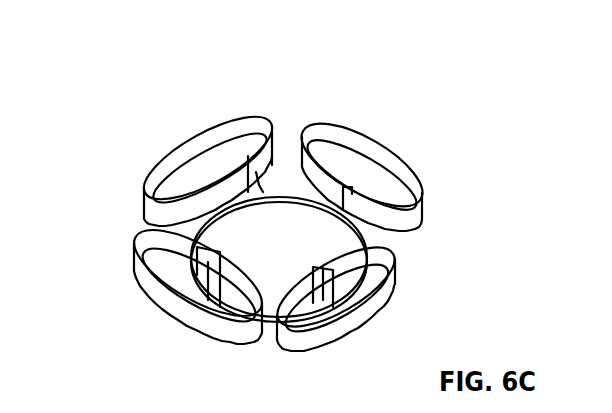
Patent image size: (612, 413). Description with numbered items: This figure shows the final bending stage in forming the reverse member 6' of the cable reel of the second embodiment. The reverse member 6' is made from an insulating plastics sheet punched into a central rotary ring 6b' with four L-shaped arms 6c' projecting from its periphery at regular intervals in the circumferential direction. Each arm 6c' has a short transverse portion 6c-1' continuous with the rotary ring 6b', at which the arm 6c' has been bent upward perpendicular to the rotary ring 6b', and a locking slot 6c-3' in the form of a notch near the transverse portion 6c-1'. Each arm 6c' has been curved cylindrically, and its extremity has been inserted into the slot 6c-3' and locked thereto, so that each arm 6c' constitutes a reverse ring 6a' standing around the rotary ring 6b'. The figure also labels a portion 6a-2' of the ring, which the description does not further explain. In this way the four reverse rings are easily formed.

The reverse member 6' is at (279, 189).
The reverse ring 6a' is at (152, 274).
The ring band portion 6a-2' is at (202, 121).
The rotary ring 6b' is at (352, 259).
The arm 6c' is at (195, 127).
The transverse portion 6c-1' is at (141, 173).
The locking slot 6c-3' is at (308, 129).